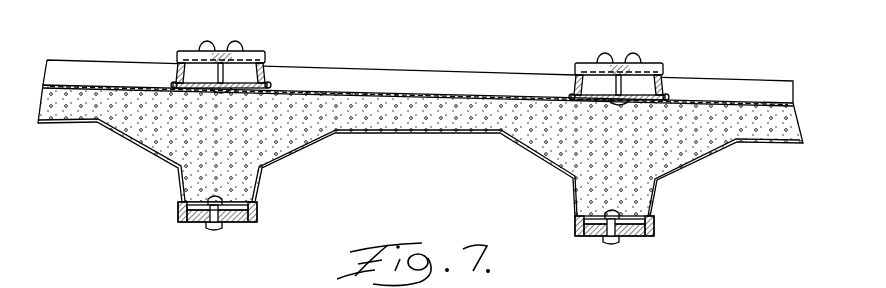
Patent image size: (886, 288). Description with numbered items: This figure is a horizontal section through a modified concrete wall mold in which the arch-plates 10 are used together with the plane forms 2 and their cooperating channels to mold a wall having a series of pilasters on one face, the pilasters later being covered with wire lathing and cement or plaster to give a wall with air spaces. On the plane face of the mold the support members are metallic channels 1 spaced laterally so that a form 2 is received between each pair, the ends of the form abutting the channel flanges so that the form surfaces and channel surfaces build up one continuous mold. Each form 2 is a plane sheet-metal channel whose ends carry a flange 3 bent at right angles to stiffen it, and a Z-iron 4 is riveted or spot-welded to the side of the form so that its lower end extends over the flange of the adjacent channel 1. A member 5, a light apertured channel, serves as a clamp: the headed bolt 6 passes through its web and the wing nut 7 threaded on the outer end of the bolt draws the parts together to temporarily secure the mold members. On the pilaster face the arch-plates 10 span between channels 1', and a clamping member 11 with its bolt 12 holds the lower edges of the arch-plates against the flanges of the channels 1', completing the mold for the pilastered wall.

The channel 1 is at (240, 68).
The channel 1' is at (435, 220).
The form 2 is at (310, 88).
The flange 3 is at (380, 75).
The Z-iron 4 is at (176, 72).
The member 5 is at (189, 52).
The headed bolt 6 is at (218, 73).
The wing nut 7 is at (236, 47).
The arch-plate 10 is at (322, 137).
The clamping member 11 is at (235, 207).
The bolt 12 is at (210, 229).